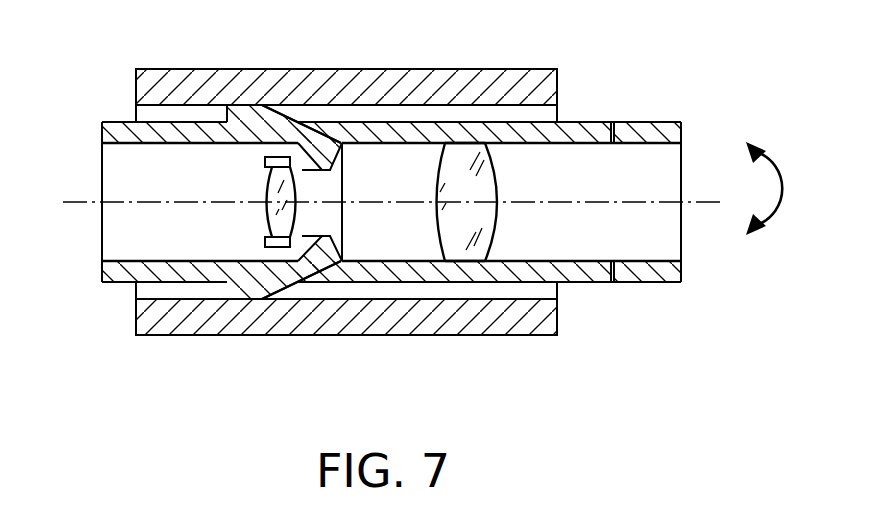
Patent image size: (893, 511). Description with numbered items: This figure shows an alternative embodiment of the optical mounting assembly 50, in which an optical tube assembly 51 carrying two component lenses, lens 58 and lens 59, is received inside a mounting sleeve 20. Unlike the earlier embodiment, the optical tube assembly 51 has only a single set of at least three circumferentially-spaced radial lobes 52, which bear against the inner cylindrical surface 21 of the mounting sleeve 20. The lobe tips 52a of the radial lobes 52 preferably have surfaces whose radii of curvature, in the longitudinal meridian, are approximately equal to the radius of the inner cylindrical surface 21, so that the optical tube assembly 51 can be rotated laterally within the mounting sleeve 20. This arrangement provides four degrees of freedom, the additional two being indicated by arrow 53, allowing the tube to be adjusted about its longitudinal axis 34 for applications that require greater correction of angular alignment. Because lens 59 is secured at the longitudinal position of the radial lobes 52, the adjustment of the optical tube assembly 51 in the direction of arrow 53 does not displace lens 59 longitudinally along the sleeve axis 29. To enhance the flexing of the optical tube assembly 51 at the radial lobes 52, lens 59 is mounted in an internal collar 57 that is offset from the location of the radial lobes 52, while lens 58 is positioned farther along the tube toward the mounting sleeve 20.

The mounting sleeve 20 is at (559, 70).
The inner cylindrical surface 21 is at (560, 110).
The sleeve axis 29 is at (90, 198).
The longitudinal axis 34 is at (697, 202).
The optical mounting assembly 50 is at (435, 213).
The optical tube assembly 51 is at (681, 122).
The radial lobes 52 is at (232, 118).
The lobe tips 52a is at (260, 107).
The arrow 53 is at (782, 186).
The internal collar 57 is at (343, 225).
The lens 58 is at (500, 225).
The lens 59 is at (260, 222).